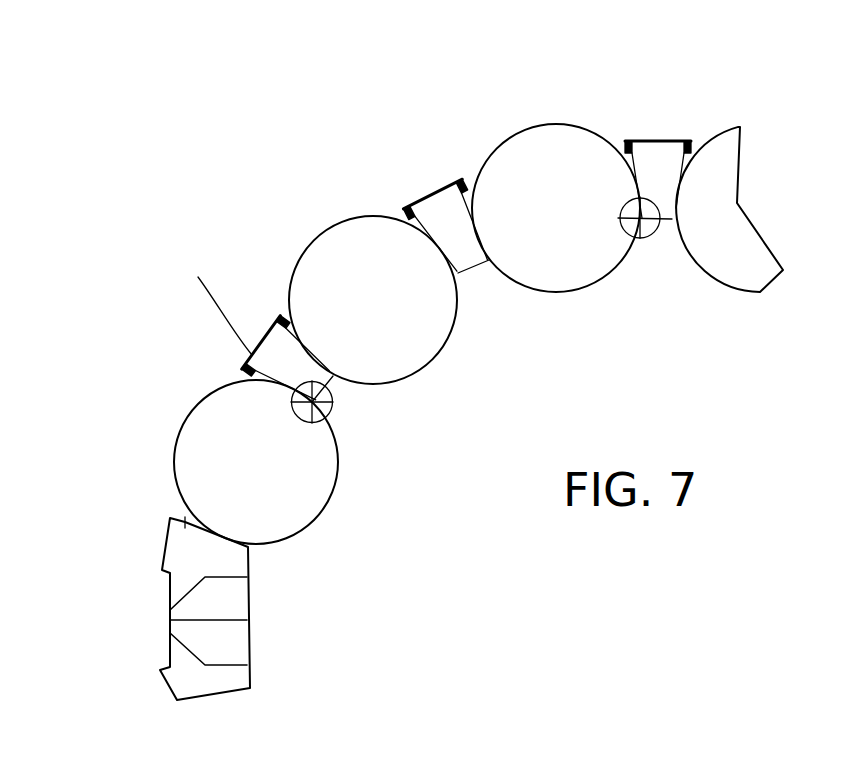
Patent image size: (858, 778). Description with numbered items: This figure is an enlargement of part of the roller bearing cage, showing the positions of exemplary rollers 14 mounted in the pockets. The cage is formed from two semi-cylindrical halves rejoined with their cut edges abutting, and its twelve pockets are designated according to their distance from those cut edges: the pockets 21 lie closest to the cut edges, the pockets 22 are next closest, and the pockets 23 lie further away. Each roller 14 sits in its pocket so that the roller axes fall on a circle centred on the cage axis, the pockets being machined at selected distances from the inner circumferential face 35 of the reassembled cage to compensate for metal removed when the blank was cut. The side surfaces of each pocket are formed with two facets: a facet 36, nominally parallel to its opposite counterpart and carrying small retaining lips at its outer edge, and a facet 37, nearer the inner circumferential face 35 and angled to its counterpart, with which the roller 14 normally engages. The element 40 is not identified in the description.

The roller 14 is at (194, 444).
The pocket closest to the cut edges 21 is at (196, 380).
The pocket next closest to the cut edges 22 is at (274, 299).
The pocket further from the cut edges 23 is at (697, 140).
The inner circumferential face 35 is at (478, 267).
The facet 36 is at (290, 352).
The facet 37 is at (312, 402).
The coupling block 40 is at (430, 188).